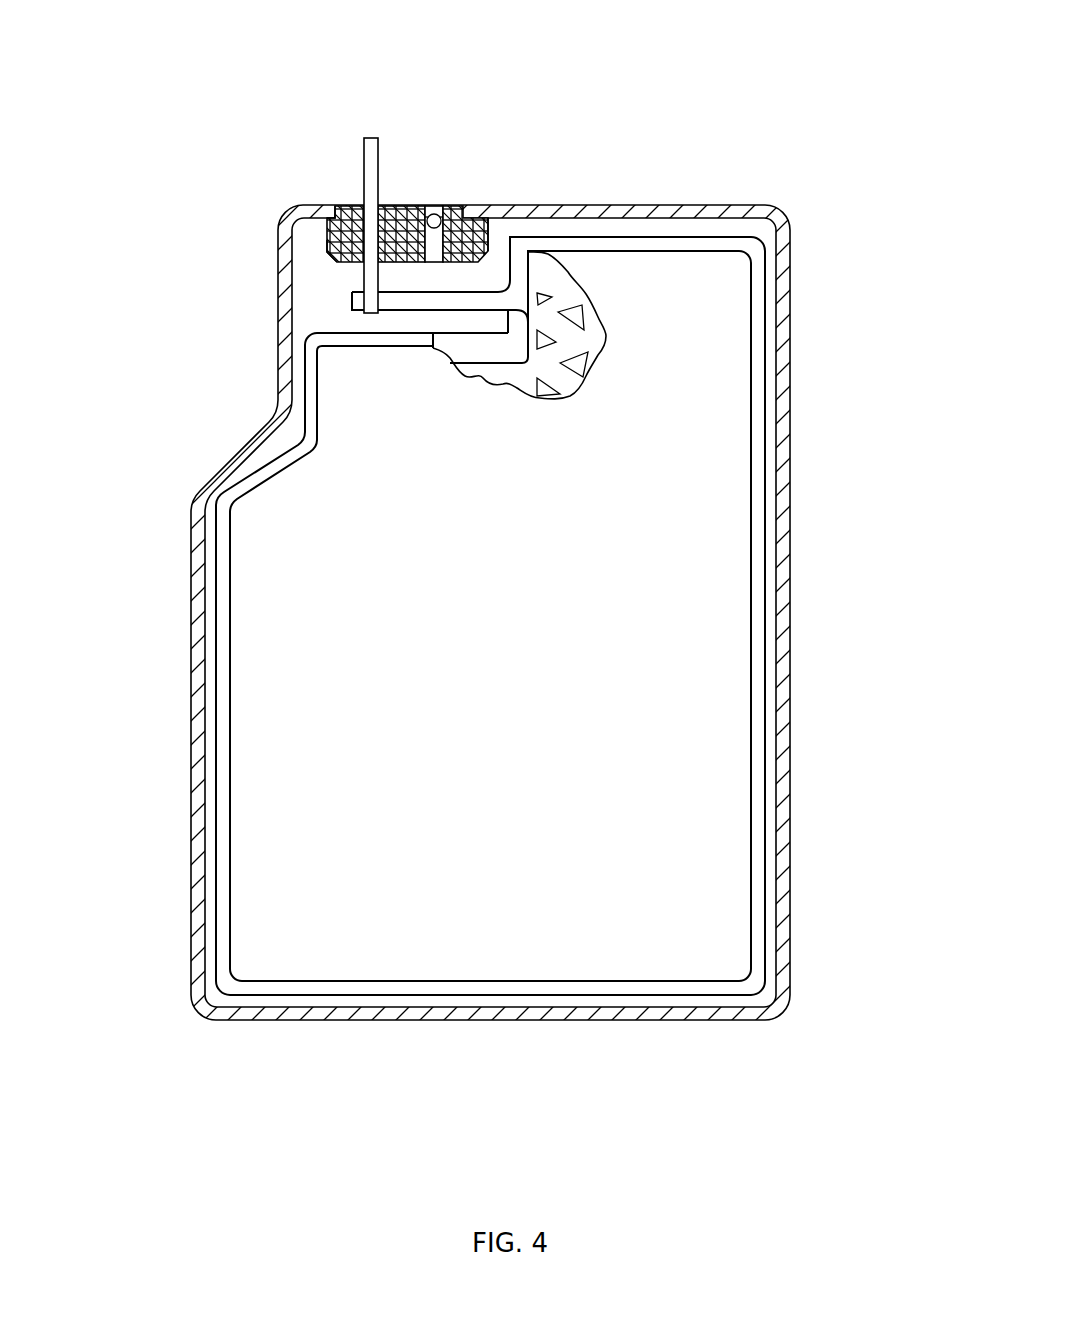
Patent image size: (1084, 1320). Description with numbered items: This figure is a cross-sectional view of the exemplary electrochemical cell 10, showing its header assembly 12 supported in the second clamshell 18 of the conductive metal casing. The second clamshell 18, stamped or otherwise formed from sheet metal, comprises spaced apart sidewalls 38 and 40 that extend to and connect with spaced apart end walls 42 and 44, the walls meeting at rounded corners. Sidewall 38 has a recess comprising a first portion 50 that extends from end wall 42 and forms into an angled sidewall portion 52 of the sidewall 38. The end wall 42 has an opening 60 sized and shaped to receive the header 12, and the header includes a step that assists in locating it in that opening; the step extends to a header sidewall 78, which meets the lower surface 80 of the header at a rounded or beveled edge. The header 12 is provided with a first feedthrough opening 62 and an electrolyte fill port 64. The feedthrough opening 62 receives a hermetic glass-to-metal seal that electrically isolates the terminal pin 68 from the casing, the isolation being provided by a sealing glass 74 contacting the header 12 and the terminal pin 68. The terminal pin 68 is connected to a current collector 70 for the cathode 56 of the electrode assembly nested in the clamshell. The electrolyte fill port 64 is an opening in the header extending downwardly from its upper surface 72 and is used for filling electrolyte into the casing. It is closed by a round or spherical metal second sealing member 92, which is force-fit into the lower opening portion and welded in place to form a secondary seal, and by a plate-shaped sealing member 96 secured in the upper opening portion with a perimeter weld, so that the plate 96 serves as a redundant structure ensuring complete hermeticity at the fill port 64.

The electrochemical cell 10 is at (667, 83).
The header assembly 12 is at (467, 204).
The second clamshell 18 is at (803, 290).
The sidewall 38 is at (190, 740).
The sidewall 40 is at (790, 604).
The end wall 42 is at (705, 204).
The end wall 44 is at (295, 1022).
The first portion 50 is at (278, 328).
The angled sidewall portion 52 is at (238, 457).
The cathode 56 is at (722, 470).
The opening 60 is at (517, 237).
The first feedthrough opening 62 is at (382, 205).
The electrolyte fill port 64 is at (455, 205).
The terminal pin 68 is at (372, 137).
The current collector 70 is at (572, 348).
The upper surface 72 is at (327, 242).
The sealing glass 74 is at (332, 205).
The sidewall 78 is at (327, 228).
The lower surface 80 is at (393, 264).
The second sealing member 92 is at (488, 242).
The sealing member 96 is at (434, 213).